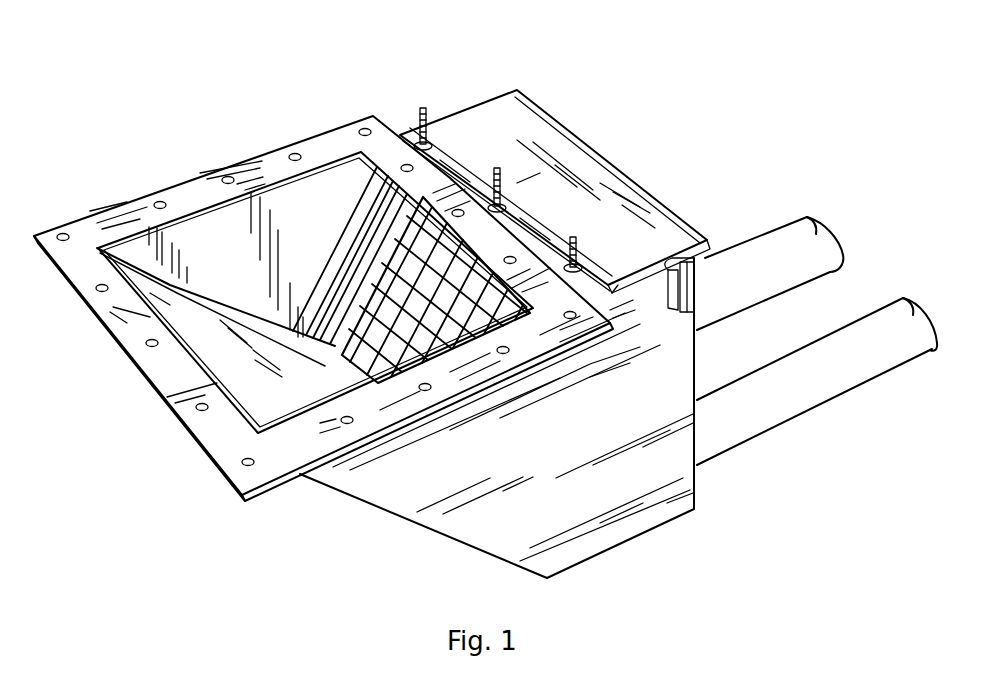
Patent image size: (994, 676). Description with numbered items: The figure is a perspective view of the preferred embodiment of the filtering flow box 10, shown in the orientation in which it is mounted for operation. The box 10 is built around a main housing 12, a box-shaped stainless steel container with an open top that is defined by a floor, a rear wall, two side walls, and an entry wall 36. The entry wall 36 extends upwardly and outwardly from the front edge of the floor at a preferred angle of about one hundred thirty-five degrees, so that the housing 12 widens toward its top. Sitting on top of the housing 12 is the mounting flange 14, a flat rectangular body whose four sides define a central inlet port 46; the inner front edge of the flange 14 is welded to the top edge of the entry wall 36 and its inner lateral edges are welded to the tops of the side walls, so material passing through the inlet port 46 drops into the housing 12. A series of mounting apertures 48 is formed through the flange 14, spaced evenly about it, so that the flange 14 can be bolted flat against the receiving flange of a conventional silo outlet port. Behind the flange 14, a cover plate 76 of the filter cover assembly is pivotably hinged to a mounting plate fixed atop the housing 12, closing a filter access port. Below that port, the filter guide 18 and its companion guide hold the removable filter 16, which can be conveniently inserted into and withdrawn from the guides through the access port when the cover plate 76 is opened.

The filtering flow box 10 is at (816, 85).
The main housing 12 is at (378, 540).
The mounting flange 14 is at (173, 405).
The removable filter 16 is at (400, 258).
The filter guide 18 is at (338, 298).
The entry wall 36 is at (263, 382).
The central inlet port 46 is at (200, 212).
The mounting apertures 48 is at (146, 346).
The cover plate 76 is at (650, 232).